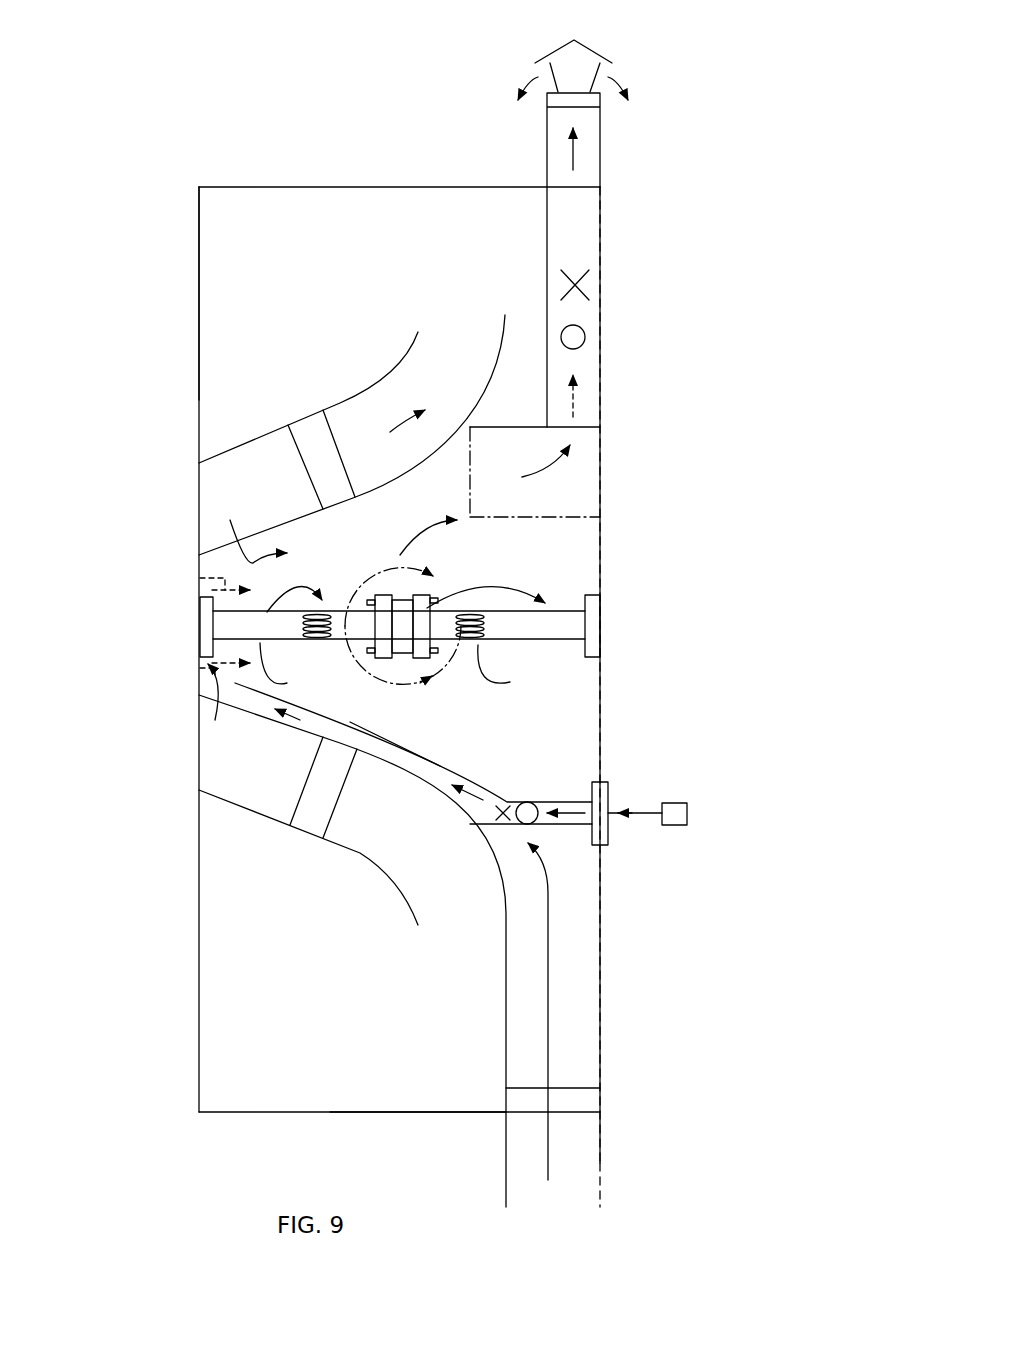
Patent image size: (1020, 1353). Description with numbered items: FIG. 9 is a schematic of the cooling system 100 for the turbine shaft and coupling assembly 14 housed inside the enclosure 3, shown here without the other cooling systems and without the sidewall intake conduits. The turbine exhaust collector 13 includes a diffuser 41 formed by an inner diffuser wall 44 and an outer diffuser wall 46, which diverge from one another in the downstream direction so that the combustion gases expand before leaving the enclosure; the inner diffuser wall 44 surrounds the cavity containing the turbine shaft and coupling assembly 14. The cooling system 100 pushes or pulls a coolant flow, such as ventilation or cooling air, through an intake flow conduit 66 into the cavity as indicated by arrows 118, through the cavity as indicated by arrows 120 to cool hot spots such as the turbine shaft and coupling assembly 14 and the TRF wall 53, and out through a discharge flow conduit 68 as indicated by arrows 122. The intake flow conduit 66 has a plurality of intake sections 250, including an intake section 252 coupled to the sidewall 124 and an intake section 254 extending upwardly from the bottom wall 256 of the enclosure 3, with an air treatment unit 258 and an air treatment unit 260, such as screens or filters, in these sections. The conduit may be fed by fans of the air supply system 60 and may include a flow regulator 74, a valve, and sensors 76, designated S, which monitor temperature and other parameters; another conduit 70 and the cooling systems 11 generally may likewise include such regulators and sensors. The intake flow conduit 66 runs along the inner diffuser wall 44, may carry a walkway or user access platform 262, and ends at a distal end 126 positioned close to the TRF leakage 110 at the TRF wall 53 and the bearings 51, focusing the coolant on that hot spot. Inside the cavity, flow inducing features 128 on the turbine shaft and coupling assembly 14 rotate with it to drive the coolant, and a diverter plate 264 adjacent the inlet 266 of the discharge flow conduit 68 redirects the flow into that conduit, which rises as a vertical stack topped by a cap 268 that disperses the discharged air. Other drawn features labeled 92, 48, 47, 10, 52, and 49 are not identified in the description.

The cooling system 100 is at (700, 62).
The cap 268 is at (580, 55).
The inlet 266 is at (587, 107).
The discharge flow conduit 68 is at (590, 175).
The discharge flow arrows 122 is at (569, 158).
The flow regulator 74 is at (580, 275).
The sensor 76 is at (585, 330).
The turbine exhaust collector 13 is at (307, 188).
The cooling systems 11 is at (393, 187).
The side wall 92 is at (199, 252).
The outer diffuser wall 46 is at (400, 368).
The diffuser 41 is at (336, 404).
The conduit 70 is at (340, 457).
The air flow 48 is at (417, 435).
The inner diffuser wall 44 is at (410, 480).
The sidewall 124 is at (600, 487).
The diverter plate 264 is at (577, 517).
The cavity flow arrows 120 is at (177, 722).
The air circulation 47 is at (345, 611).
The rotor hub 10 is at (403, 627).
The flow inducing features 128 is at (322, 640).
The TRF leakage 110 is at (199, 622).
The bearings 51 is at (200, 613).
The right bearing 52 is at (593, 622).
The shaft 49 is at (525, 642).
The TRF wall 53 is at (200, 690).
The turbine shaft and coupling assembly 14 is at (528, 693).
The intake flow arrows 118 is at (295, 722).
The distal end 126 is at (243, 712).
The walkway or user access platform 262 is at (427, 757).
The intake flow conduit 66 is at (447, 765).
The intake section 252 is at (592, 790).
The air supply system 60 is at (688, 813).
The air treatment unit 258 is at (613, 832).
The intake sections 250 is at (458, 1023).
The intake section 254 is at (601, 1062).
The air treatment unit 260 is at (588, 1098).
The enclosure 3 is at (245, 1112).
The bottom wall 256 is at (367, 1112).